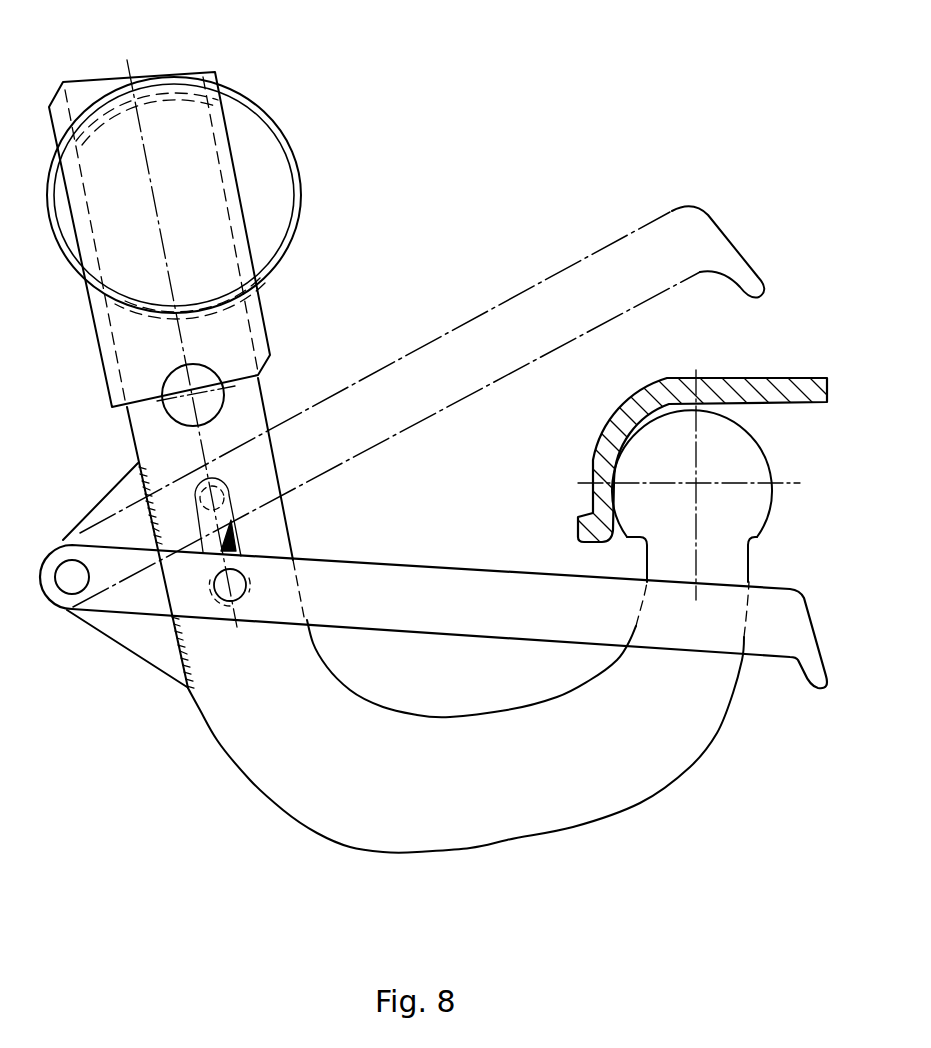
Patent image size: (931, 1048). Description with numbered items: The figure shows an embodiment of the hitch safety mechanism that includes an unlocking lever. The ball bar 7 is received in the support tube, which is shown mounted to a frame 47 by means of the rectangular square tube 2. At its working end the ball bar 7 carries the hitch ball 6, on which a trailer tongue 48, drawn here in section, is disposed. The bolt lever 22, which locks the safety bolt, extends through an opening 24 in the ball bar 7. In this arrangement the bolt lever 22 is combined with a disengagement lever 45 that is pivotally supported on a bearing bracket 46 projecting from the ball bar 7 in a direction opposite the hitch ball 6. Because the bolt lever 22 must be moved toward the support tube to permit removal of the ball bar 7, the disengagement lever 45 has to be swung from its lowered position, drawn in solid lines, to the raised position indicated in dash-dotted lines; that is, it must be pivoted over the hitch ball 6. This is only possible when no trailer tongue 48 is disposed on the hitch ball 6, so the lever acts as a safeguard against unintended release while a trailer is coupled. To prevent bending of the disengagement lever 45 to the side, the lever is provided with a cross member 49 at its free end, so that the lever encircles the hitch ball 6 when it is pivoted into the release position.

The square tube 2 is at (258, 326).
The hitch ball 6 is at (764, 455).
The ball bar 7 is at (313, 808).
The bolt lever 22 is at (242, 571).
The opening 24 is at (237, 523).
The disengagement lever 45 is at (485, 298).
The bearing bracket 46 is at (113, 623).
The frame 47 is at (258, 108).
The trailer tongue 48 is at (748, 390).
The cross member 49 is at (750, 268).